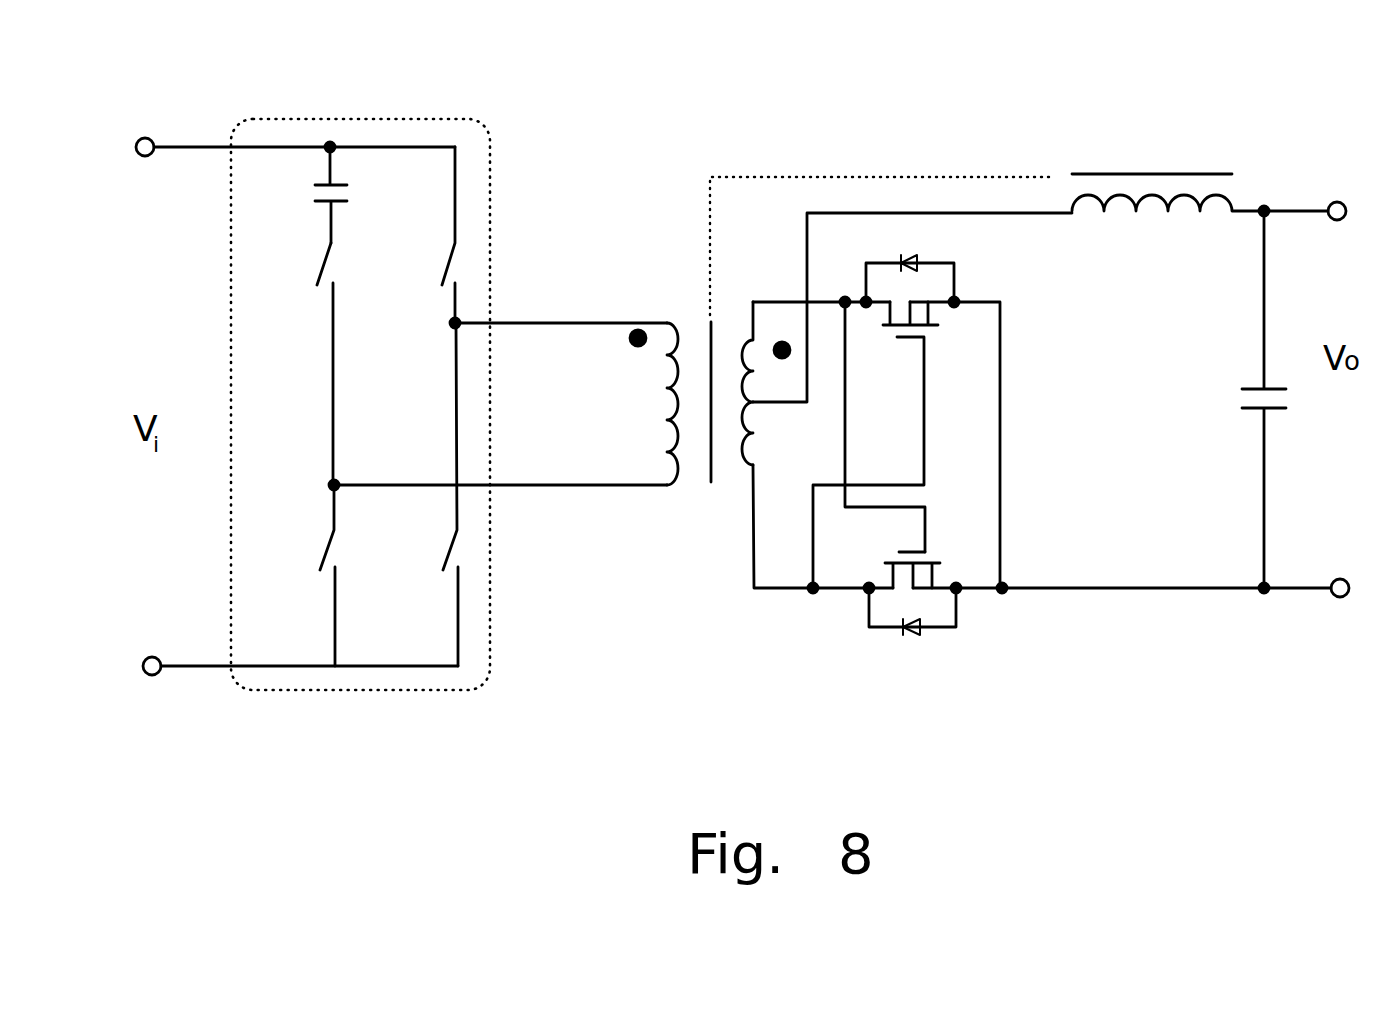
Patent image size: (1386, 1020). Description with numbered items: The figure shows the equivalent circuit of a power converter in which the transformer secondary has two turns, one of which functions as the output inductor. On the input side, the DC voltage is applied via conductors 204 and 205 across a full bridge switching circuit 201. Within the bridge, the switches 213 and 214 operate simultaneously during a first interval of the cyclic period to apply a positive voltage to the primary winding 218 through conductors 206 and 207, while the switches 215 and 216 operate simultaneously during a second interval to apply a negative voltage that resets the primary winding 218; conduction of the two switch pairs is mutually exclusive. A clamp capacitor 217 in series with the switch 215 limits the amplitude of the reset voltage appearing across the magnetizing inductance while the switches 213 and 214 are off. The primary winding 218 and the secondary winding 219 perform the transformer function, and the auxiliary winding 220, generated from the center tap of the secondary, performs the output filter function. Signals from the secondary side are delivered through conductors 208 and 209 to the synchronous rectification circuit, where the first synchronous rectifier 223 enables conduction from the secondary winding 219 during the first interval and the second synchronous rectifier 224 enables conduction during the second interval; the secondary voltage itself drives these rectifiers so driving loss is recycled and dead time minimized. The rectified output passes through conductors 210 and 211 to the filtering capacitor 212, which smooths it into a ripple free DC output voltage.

The full bridge switching circuit 201 is at (380, 132).
The conductor 204 is at (183, 147).
The conductor 205 is at (190, 666).
The conductor 206 is at (565, 320).
The conductor 207 is at (570, 485).
The conductor 208 is at (820, 279).
The conductor 209 is at (780, 588).
The conductor 210 is at (1295, 211).
The conductor 211 is at (1300, 588).
The filtering capacitor 212 is at (1235, 399).
The switch 213 is at (420, 235).
The switch 214 is at (300, 575).
The switch 215 is at (297, 364).
The switch 216 is at (423, 494).
The clamp capacitor 217 is at (302, 195).
The primary winding 218 is at (640, 404).
The secondary winding 219 is at (742, 383).
The auxiliary winding 220 is at (1168, 227).
The first synchronous rectifier 223 is at (912, 616).
The second synchronous rectifier 224 is at (883, 400).